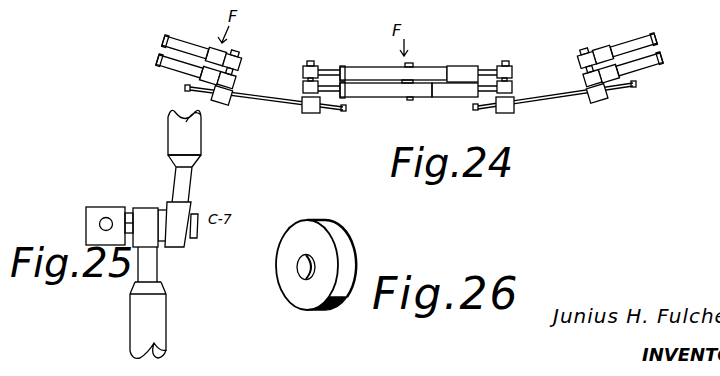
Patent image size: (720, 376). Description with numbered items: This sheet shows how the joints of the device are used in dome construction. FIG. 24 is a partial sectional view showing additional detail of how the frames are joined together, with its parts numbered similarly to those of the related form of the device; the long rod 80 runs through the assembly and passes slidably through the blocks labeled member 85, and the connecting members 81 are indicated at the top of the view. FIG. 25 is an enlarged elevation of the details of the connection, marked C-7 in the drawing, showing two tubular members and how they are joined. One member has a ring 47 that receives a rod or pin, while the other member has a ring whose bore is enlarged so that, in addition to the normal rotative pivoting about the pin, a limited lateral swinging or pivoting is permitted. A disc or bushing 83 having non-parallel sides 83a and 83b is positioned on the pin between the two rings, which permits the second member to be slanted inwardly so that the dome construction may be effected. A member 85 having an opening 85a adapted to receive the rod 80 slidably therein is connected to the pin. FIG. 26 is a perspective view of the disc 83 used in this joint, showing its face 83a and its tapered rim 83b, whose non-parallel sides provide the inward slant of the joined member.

In FIG. 24, the rod 80 is at (259, 97).
In FIG. 24, the connecting member 81 is at (527, 12).
In FIG. 24, the member 85 is at (232, 103).
In FIG. 25, the member 85 is at (88, 212).
In FIG. 25, the opening 85a is at (106, 217).
In FIG. 25, the disc or bushing 83 is at (162, 211).
In FIG. 26, the disc or bushing 83 is at (305, 230).
In FIG. 25, the side 83a is at (152, 212).
In FIG. 26, the side 83a is at (294, 303).
In FIG. 25, the side 83b is at (162, 246).
In FIG. 26, the side 83b is at (350, 242).
In FIG. 25, the clamp block 47 is at (139, 210).
In FIG. 24, the clamp assembly C-7 is at (250, 65).